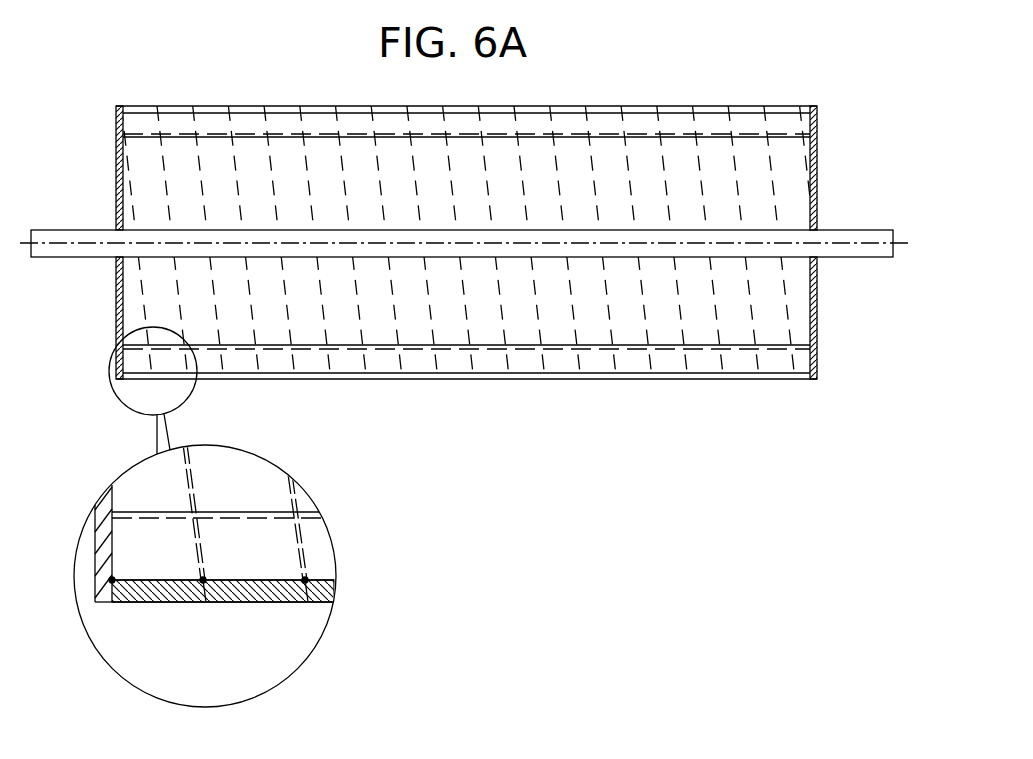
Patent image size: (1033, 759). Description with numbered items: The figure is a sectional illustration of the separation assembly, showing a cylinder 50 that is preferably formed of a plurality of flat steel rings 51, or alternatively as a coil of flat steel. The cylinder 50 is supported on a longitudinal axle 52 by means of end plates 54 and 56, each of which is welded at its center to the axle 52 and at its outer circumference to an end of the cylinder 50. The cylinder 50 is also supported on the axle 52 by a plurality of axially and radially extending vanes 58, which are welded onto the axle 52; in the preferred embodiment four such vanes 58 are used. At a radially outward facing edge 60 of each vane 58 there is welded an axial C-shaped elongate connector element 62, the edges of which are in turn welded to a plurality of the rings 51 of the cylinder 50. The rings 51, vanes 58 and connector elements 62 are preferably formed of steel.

The cylinder 50 is at (637, 392).
The flat steel rings 51 is at (457, 363).
The longitudinal axle 52 is at (833, 258).
The end plate 54 is at (117, 292).
The end plate 56 is at (818, 328).
The vanes 58 is at (227, 472).
The radially outward facing edge 60 is at (228, 512).
The C-shaped elongate connector element 62 is at (313, 535).